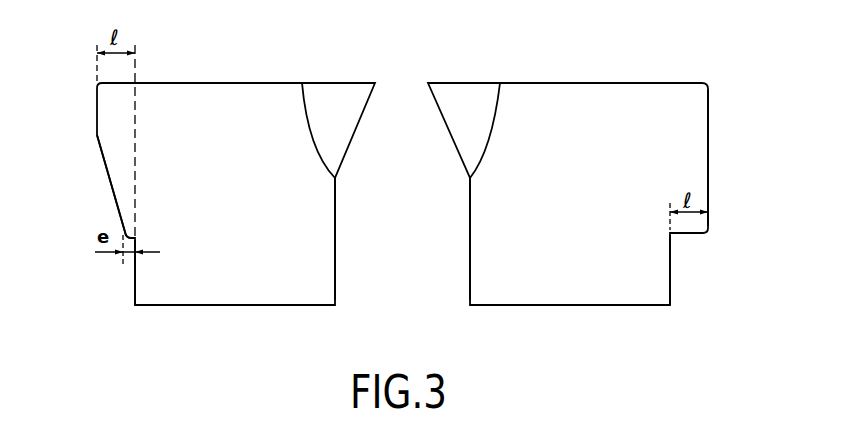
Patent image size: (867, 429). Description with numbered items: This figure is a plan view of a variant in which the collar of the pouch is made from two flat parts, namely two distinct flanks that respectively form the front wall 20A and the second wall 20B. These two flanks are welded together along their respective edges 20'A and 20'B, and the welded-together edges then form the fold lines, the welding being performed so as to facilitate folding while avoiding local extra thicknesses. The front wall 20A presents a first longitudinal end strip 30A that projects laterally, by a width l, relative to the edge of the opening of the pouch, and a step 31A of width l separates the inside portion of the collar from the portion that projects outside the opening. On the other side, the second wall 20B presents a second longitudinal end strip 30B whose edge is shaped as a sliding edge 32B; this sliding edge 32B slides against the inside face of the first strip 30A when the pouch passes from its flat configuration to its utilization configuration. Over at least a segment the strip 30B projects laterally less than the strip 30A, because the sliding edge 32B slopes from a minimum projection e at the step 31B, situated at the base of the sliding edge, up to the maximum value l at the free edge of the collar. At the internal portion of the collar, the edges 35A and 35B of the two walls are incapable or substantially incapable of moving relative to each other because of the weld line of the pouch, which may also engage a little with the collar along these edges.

The second wall 20B is at (250, 195).
The front wall 20A is at (597, 195).
The edge of second wall 20'B is at (361, 232).
The edge of front wall 20'A is at (441, 232).
The second longitudinal end strip 30B is at (120, 115).
The first longitudinal end strip 30A is at (708, 172).
The step 31B is at (136, 239).
The step 31A is at (688, 235).
The sliding edge 32B is at (108, 174).
The edge of second wall internal portion 35B is at (135, 282).
The edge of front wall internal portion 35A is at (670, 280).